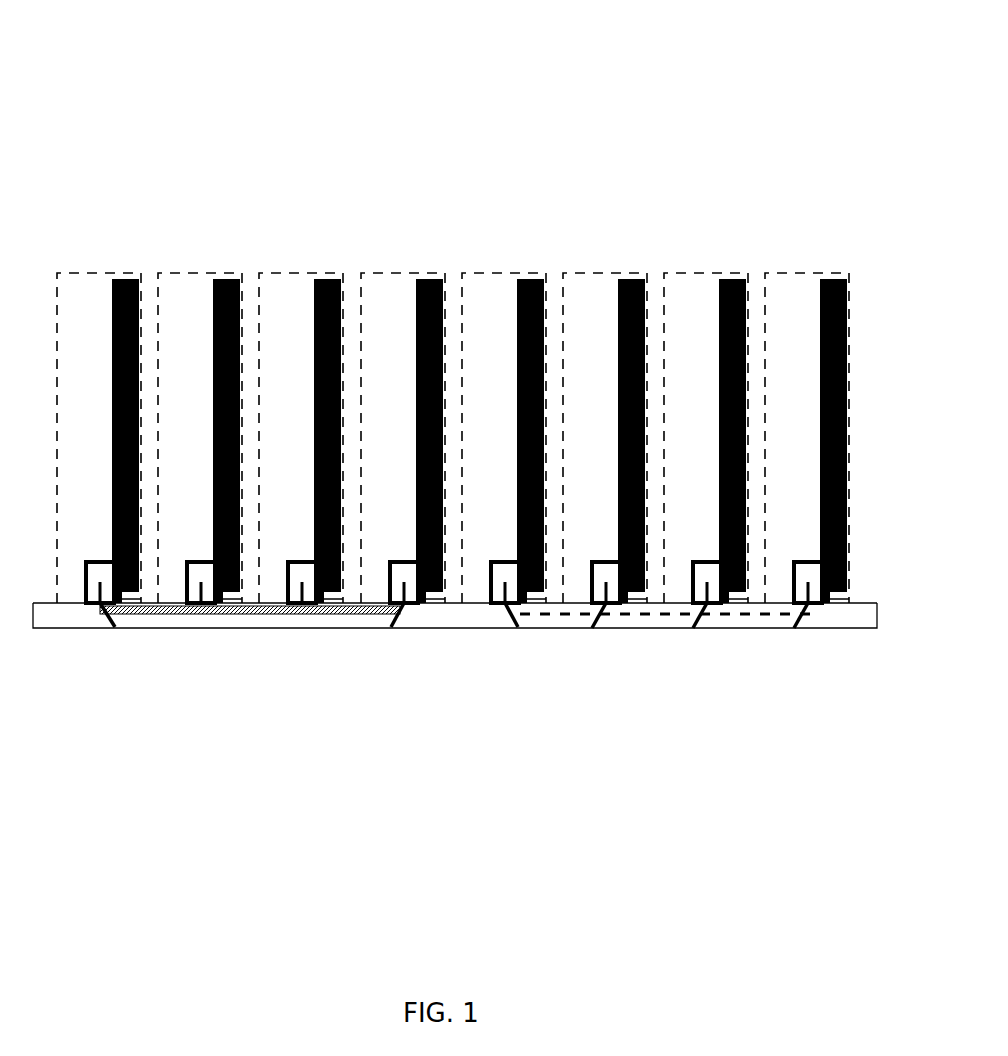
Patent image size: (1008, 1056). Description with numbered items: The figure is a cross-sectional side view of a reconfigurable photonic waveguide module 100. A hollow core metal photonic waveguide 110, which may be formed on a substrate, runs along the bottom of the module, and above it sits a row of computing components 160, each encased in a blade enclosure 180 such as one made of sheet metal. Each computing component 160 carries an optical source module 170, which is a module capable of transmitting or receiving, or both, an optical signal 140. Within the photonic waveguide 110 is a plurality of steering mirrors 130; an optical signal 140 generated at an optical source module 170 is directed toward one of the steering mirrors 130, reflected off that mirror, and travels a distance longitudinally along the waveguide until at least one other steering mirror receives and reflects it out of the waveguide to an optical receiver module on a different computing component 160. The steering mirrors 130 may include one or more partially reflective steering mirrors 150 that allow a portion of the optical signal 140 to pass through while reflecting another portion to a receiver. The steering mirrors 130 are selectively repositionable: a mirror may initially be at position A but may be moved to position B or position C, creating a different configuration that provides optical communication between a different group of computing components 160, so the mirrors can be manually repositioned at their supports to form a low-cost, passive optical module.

The photonic waveguide module 100 is at (525, 200).
The hollow core metal photonic waveguide 110 is at (43, 617).
The steering mirrors 130 is at (389, 627).
The optical signal 140 is at (178, 616).
The partially reflective steering mirror 150 is at (308, 616).
The computing component 160 is at (127, 277).
The optical source module 170 is at (90, 576).
The blade enclosure 180 is at (290, 274).
The position A is at (593, 628).
The position B is at (694, 628).
The position C is at (795, 628).